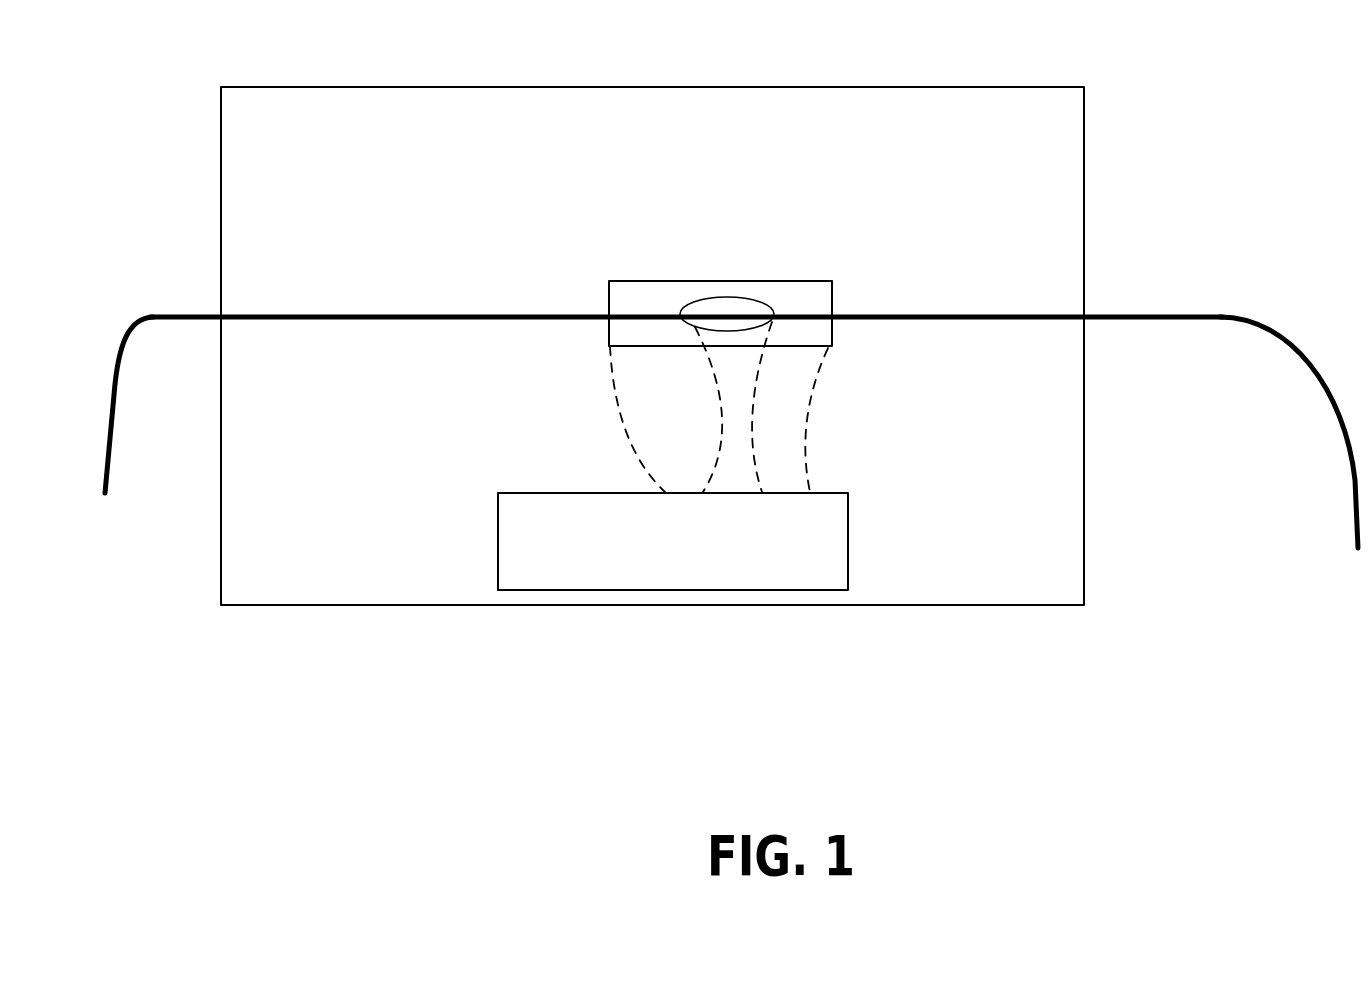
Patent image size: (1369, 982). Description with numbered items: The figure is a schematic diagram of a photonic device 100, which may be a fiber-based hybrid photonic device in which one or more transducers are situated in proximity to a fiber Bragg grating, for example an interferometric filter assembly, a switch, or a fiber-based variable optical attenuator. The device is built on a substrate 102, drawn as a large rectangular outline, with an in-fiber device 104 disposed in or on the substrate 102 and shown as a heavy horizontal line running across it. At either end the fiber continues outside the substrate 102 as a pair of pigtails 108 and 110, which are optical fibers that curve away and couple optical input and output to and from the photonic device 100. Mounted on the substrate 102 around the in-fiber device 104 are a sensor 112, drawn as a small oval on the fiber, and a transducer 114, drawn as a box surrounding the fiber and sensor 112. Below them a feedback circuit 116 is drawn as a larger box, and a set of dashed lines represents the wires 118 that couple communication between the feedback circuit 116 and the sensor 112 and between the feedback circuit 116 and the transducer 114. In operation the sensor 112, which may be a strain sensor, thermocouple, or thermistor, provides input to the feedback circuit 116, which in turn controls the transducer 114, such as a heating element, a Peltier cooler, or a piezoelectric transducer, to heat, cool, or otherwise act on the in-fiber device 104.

The photonic device 100 is at (542, 736).
The substrate 102 is at (1090, 605).
The in-fiber device 104 is at (1020, 325).
The pigtail 108 is at (1309, 345).
The pigtail 110 is at (126, 428).
The sensor 112 is at (775, 302).
The transducer 114 is at (606, 277).
The feedback circuit 116 is at (840, 598).
The wires 118 is at (660, 475).